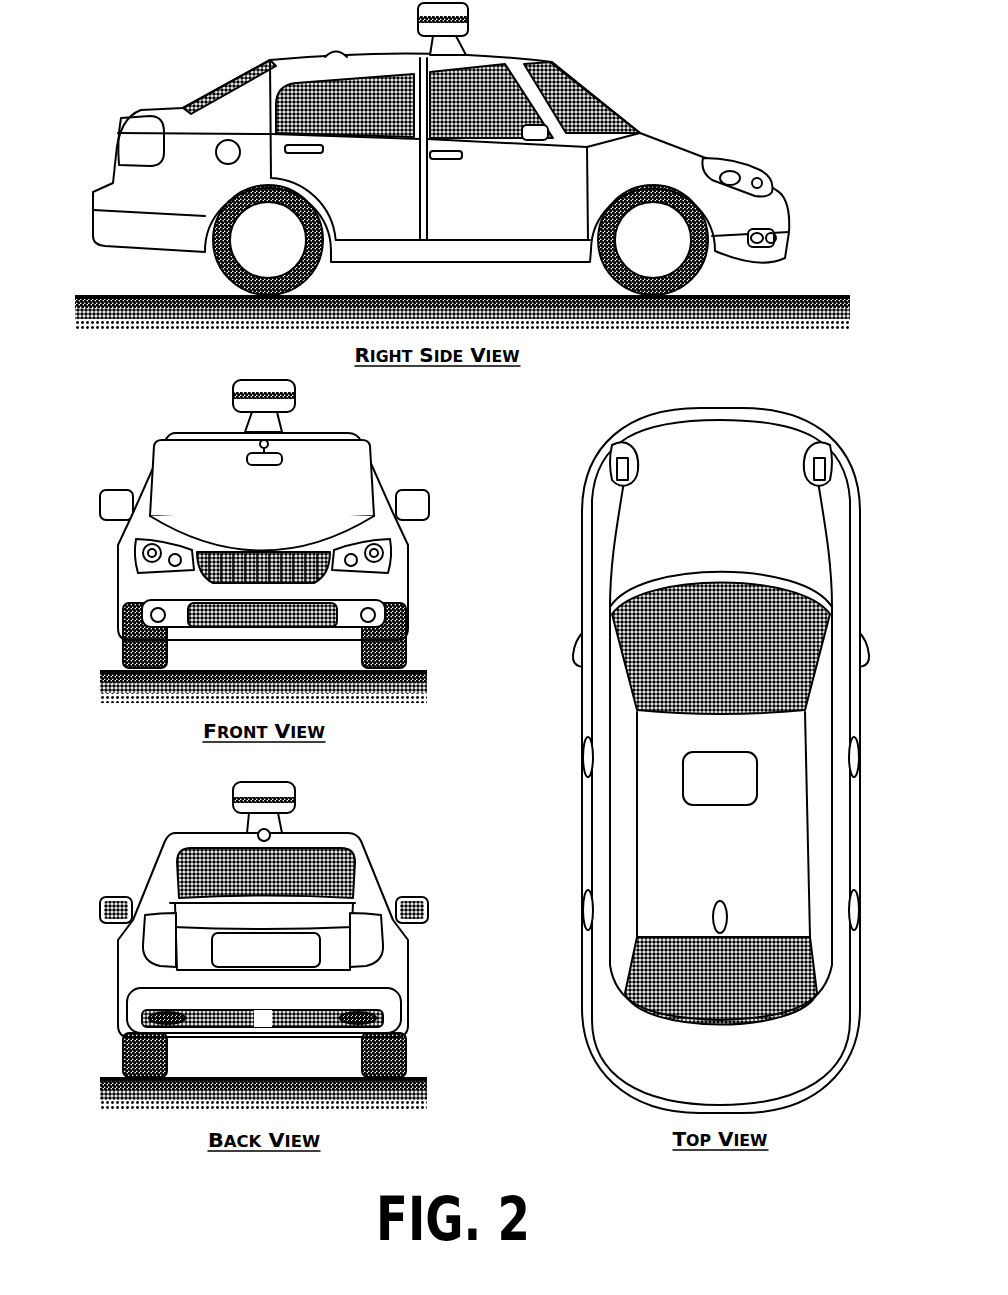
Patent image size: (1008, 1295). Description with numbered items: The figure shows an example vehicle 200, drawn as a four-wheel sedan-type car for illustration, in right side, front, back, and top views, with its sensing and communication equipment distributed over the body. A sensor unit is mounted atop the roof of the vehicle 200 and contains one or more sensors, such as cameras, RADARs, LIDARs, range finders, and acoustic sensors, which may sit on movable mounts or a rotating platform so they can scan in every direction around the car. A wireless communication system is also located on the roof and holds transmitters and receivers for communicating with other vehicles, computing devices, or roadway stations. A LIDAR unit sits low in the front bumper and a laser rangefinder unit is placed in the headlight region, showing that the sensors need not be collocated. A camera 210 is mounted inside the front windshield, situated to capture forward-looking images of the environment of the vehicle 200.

The example vehicle 200 is at (440, 149).
The camera 210 is at (272, 446).